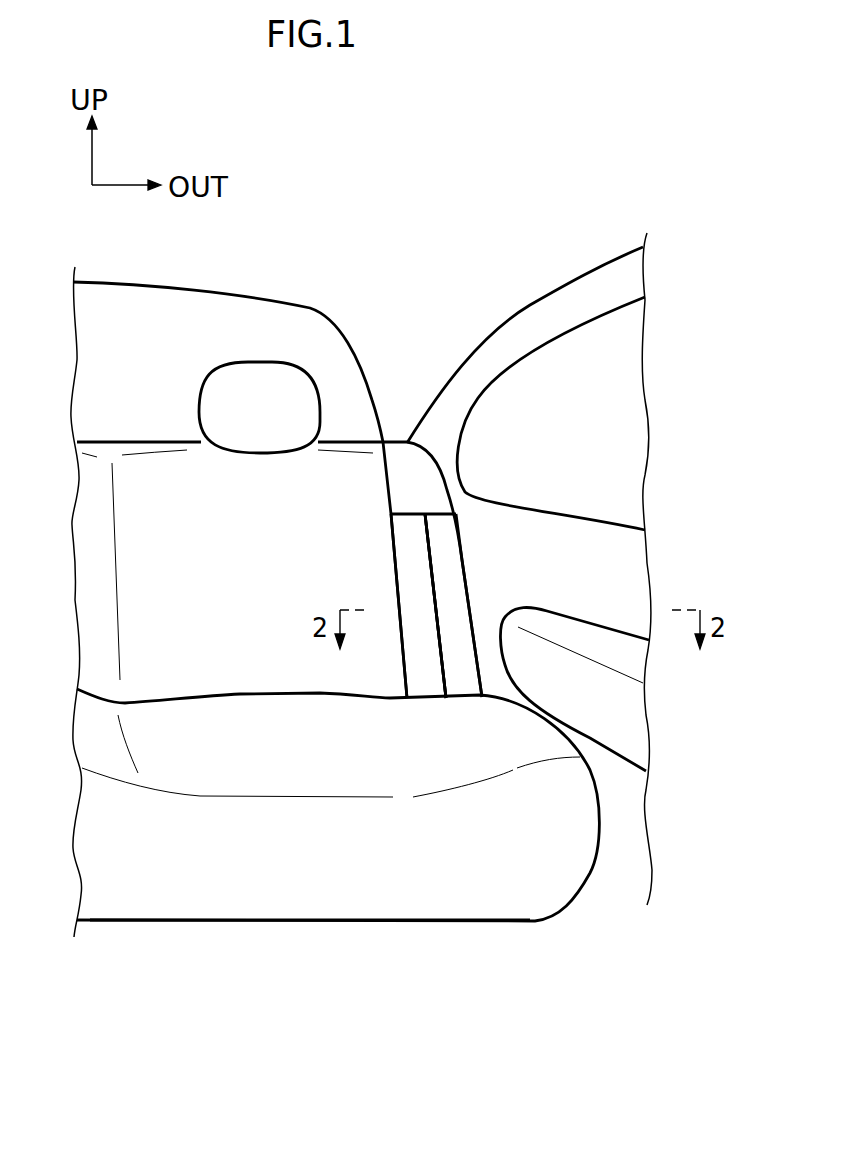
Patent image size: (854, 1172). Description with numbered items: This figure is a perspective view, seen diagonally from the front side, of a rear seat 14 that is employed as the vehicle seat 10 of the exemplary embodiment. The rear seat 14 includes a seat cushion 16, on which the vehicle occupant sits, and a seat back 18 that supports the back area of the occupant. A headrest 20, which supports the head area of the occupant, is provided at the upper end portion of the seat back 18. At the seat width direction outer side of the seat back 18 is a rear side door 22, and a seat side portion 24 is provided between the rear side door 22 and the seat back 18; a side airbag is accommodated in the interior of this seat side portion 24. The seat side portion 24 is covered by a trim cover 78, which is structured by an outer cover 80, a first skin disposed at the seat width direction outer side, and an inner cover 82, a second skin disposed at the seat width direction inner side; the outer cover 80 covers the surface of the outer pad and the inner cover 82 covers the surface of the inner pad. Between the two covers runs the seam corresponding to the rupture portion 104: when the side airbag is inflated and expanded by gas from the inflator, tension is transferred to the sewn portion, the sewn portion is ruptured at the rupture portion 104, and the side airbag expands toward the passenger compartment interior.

The vehicle seat 10 is at (336, 650).
The rear seat 14 is at (411, 922).
The seat cushion 16 is at (267, 880).
The seat back 18 is at (148, 476).
The headrest 20 is at (260, 381).
The rear side door 22 is at (607, 605).
The seat side portion 24 is at (402, 484).
The trim cover 78 is at (479, 636).
The outer cover 80 is at (453, 594).
The inner cover 82 is at (421, 643).
The rupture portion 104 is at (433, 568).